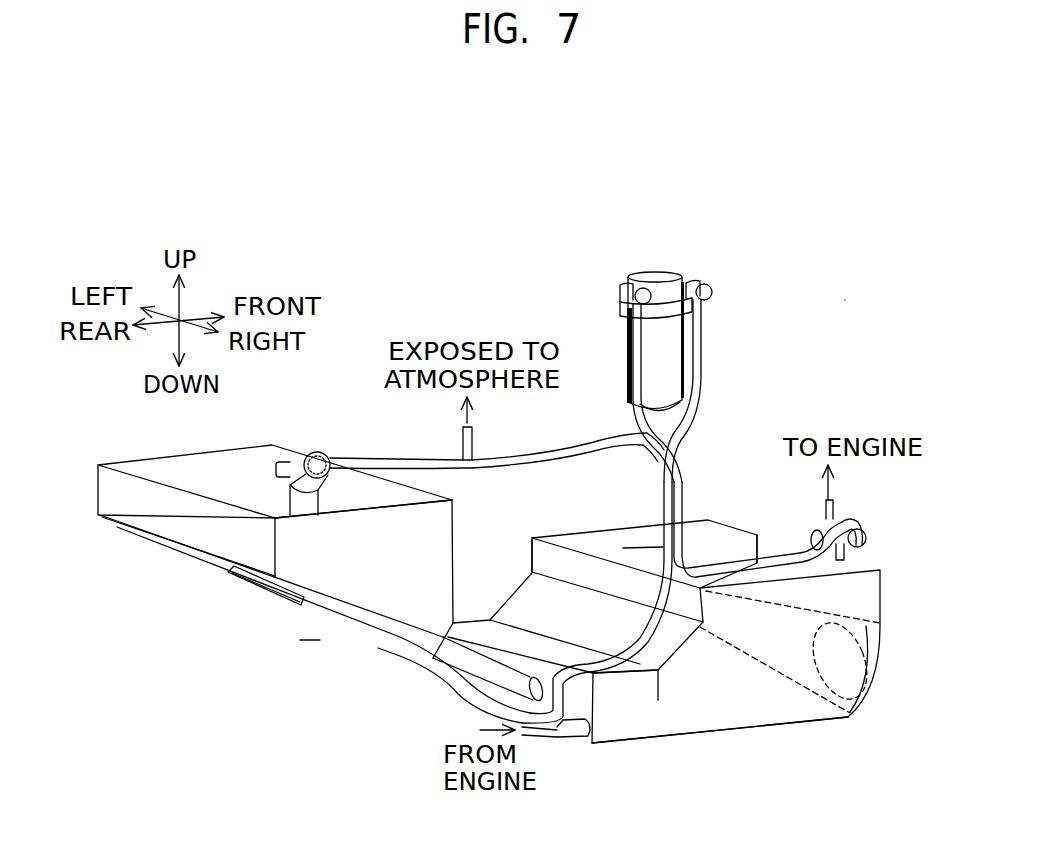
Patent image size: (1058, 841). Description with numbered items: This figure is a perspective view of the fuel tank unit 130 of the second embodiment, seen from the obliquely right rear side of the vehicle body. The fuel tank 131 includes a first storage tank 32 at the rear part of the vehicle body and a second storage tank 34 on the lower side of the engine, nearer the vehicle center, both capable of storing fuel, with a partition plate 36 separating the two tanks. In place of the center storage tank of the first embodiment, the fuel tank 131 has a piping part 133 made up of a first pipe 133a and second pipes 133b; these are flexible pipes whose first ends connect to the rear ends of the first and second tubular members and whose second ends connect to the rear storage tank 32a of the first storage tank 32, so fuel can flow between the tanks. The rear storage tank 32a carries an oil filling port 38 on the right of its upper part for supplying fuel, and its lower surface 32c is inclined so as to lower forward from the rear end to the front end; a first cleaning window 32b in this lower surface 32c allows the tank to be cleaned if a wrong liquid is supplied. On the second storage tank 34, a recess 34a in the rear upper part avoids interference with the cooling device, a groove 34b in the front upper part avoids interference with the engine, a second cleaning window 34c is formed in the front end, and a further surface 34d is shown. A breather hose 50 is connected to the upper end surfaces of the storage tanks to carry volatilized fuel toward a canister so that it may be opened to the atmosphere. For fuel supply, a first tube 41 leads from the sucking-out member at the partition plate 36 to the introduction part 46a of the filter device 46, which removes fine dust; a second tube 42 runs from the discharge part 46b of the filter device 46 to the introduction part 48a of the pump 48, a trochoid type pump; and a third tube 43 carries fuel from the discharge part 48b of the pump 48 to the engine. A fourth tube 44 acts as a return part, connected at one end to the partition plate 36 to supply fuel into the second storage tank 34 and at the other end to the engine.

The first storage tank 32 is at (172, 560).
The rear storage tank 32a is at (433, 546).
The first cleaning window 32b is at (258, 597).
The lower surface 32c is at (362, 628).
The second storage tank 34 is at (743, 725).
The recess 34a is at (544, 580).
The groove 34b is at (752, 558).
The second cleaning window 34c is at (862, 690).
The case bottom surface 34d is at (790, 712).
The partition plate 36 is at (577, 690).
The oil filling port 38 is at (316, 452).
The first tube 41 is at (610, 673).
The second tube 42 is at (634, 426).
The third tube 43 is at (826, 506).
The fourth tube 44 is at (545, 740).
The filter device 46 is at (686, 272).
The introduction part 46a is at (710, 296).
The discharge part 46b is at (620, 300).
The pump 48 is at (870, 546).
The introduction part 48a is at (862, 530).
The discharge part 48b is at (843, 520).
The breather hose 50 is at (407, 458).
The fuel tank unit 130 is at (818, 330).
The fuel tank 131 is at (303, 647).
The piping part 133 is at (363, 763).
The first pipe 133a is at (427, 697).
The second pipes 133b is at (420, 672).